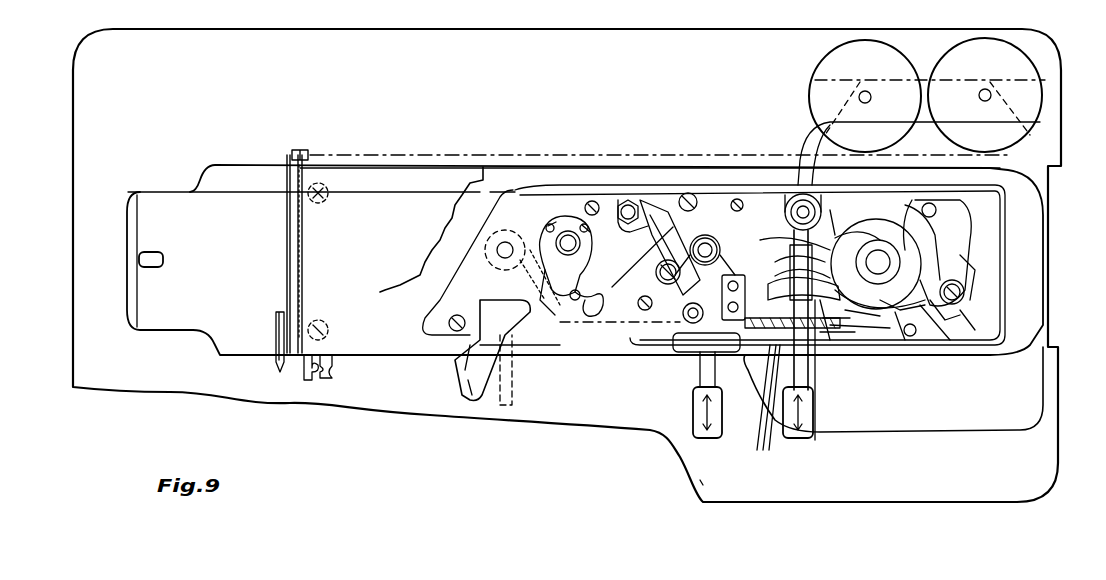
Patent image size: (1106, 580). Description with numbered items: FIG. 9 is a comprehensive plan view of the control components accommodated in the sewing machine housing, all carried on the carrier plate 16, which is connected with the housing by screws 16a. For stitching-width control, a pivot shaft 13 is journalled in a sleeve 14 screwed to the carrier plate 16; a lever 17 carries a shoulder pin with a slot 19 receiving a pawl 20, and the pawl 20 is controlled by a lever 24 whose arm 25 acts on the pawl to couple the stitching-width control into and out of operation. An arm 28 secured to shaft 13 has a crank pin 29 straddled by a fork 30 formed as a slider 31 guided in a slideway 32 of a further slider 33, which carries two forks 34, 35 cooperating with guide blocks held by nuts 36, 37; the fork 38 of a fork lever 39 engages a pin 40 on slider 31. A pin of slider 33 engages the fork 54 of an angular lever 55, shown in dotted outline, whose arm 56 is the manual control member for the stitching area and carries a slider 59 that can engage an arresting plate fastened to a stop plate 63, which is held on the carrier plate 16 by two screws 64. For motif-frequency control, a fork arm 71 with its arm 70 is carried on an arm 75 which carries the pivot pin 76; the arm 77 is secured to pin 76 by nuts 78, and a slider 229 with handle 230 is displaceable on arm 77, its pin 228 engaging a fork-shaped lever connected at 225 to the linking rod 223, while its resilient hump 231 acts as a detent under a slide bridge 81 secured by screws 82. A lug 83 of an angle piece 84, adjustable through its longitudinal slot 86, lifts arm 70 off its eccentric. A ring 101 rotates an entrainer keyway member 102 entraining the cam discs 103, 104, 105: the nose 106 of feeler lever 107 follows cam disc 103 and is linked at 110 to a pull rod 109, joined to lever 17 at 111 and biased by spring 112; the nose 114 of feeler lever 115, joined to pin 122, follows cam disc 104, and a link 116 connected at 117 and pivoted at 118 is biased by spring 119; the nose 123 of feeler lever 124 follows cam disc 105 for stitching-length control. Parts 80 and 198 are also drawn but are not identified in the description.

The pivot shaft 13 is at (562, 232).
The sleeve 14 is at (571, 232).
The carrier plate 16 is at (447, 322).
The screws 16a is at (440, 340).
The lever 17 is at (560, 300).
The slot 19 is at (495, 250).
The pawl 20 is at (553, 252).
The lever 24 is at (470, 360).
The arm 25 is at (611, 280).
The arm 28 is at (592, 201).
The crank pin 29 is at (577, 302).
The fork 30 is at (592, 310).
The slider 31 is at (712, 238).
The slideway 32 is at (701, 202).
The slider 33 is at (716, 243).
The fork 34 is at (669, 259).
The fork 35 is at (696, 362).
The nut 36 is at (628, 200).
The nut 37 is at (700, 400).
The fork 38 is at (633, 200).
The fork lever 39 is at (634, 307).
The pin 40 is at (652, 225).
The fork 54 is at (652, 340).
The angular lever 55 is at (748, 200).
The arm 56 is at (722, 352).
The slider 59 is at (692, 428).
The stop plate 63 is at (673, 360).
The screws 64 is at (683, 318).
The arm 70 is at (798, 185).
The fork arm 71 is at (878, 252).
The arm 75 is at (790, 248).
The pivot pin 76 is at (838, 218).
The arm or handle 77 is at (808, 400).
The nuts 78 is at (805, 200).
The lever 80 is at (825, 340).
The slide bridge 81 is at (830, 330).
The screws 82 is at (878, 328).
The lug 83 is at (848, 230).
The angle piece 84 is at (803, 194).
The longitudinal slot 86 is at (798, 204).
The ring 101 is at (990, 230).
The entrainer keyway member 102 is at (878, 264).
The cam disc 103 is at (890, 233).
The cam disc 104 is at (970, 305).
The cam disc 105 is at (900, 235).
The nose 106 is at (940, 218).
The feeler lever 107 is at (920, 307).
The pull rod 109 is at (906, 335).
The link point 110 is at (917, 317).
The joint 111 is at (527, 330).
The spring 112 is at (448, 330).
The nose 114 is at (895, 325).
The feeler lever 115 is at (963, 280).
The link 116 is at (965, 312).
The connection point 117 is at (967, 297).
The pivotal connection 118 is at (725, 400).
The spring 119 is at (752, 450).
The pin 122 is at (935, 207).
The nose 123 is at (943, 313).
The feeler lever 124 is at (965, 252).
The spring 198 is at (836, 340).
The linking rod 223 is at (745, 330).
The connection point 225 is at (786, 271).
The pin 228 is at (703, 485).
The slider 229 is at (773, 420).
The handle 230 is at (800, 440).
The resilient nose or hump 231 is at (822, 420).